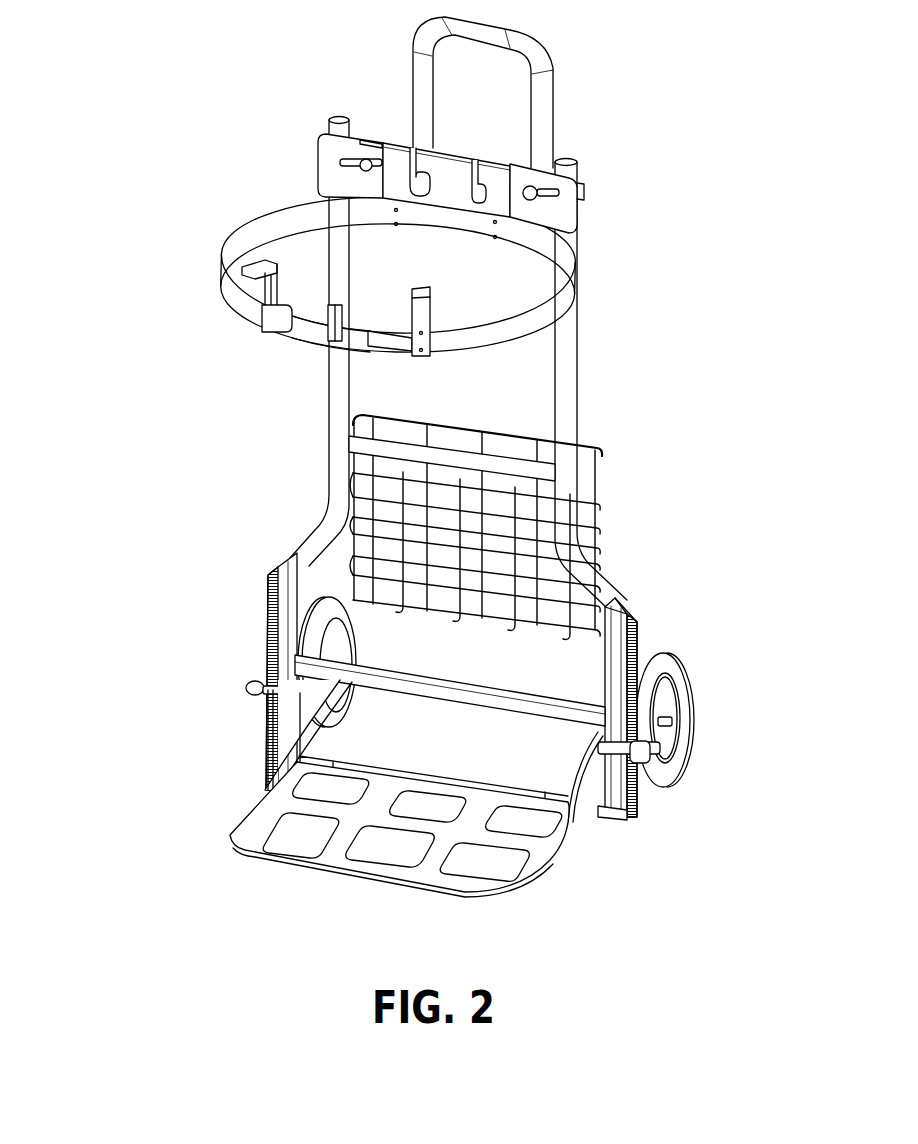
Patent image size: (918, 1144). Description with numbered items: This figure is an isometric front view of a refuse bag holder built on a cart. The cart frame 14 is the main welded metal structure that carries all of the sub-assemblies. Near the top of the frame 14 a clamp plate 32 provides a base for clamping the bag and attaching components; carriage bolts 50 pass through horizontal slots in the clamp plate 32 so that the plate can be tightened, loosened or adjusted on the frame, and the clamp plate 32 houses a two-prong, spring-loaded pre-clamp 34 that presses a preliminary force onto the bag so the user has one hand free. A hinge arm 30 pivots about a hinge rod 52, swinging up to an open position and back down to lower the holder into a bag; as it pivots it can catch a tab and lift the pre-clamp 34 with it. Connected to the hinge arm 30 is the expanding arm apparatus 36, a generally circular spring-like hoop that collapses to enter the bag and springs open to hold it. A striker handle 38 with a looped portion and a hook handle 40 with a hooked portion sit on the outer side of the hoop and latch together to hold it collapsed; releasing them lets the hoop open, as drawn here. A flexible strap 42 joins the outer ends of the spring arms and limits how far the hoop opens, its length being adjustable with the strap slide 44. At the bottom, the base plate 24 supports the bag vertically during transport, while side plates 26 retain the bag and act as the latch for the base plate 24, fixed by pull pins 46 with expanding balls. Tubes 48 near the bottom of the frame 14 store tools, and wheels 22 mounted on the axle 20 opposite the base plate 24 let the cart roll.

The cart frame 14 is at (432, 459).
The axle 20 is at (673, 723).
The wheels 22 is at (690, 663).
The base plate 24 is at (222, 840).
The side plates 26 is at (585, 818).
The hinge arm 30 is at (434, 219).
The clamp plate 32 is at (587, 205).
The pre-clamp 34 is at (498, 190).
The expanding arm apparatus 36 is at (220, 250).
The striker handle 38 is at (258, 317).
The hook handle 40 is at (370, 350).
The strap 42 is at (307, 338).
The strap slide 44 is at (332, 347).
The pull pins 46 is at (652, 763).
The tubes 48 is at (290, 568).
The carriage bolts 50 is at (547, 207).
The hinge rod 52 is at (540, 163).